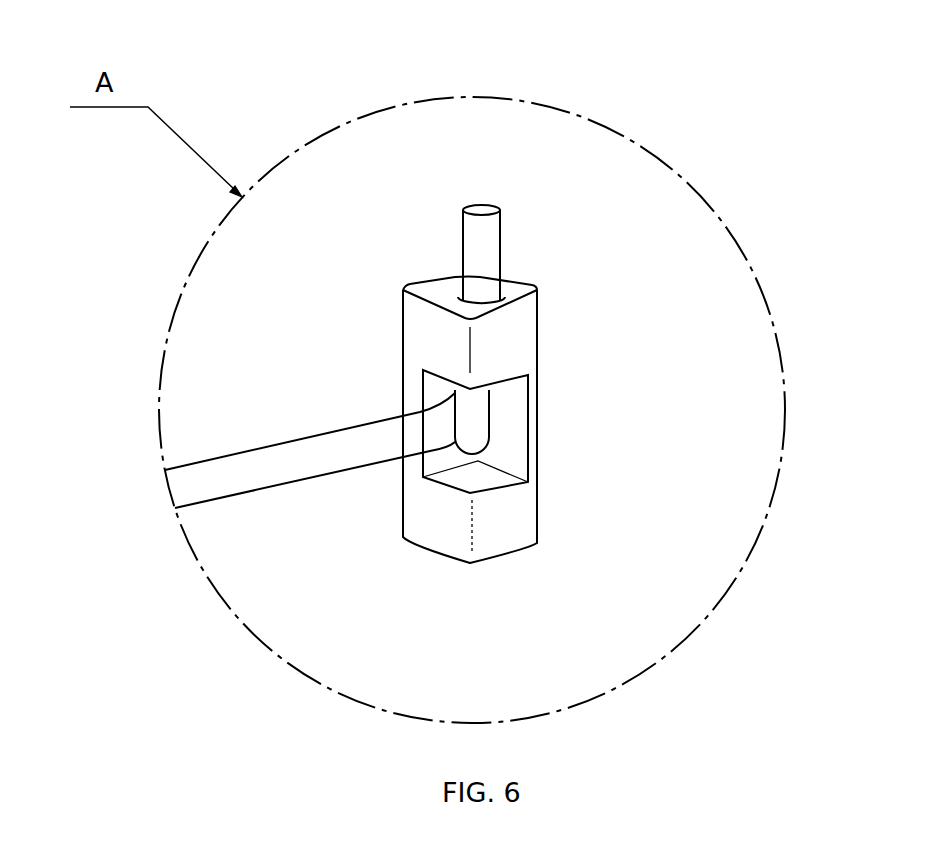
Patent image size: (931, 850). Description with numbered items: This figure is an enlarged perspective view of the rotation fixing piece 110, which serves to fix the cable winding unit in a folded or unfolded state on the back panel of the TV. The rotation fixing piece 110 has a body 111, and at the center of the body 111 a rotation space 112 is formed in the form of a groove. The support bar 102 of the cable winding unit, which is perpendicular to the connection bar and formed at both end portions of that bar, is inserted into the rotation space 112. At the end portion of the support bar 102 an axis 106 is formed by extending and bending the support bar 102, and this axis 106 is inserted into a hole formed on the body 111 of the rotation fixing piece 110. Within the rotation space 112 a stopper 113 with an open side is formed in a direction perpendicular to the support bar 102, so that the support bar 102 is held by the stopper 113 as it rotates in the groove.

The support bar 102 is at (252, 478).
The axis 106 is at (483, 210).
The rotation fixing piece 110 is at (613, 247).
The body 111 is at (518, 343).
The rotation space 112 is at (505, 425).
The stopper 113 is at (477, 448).